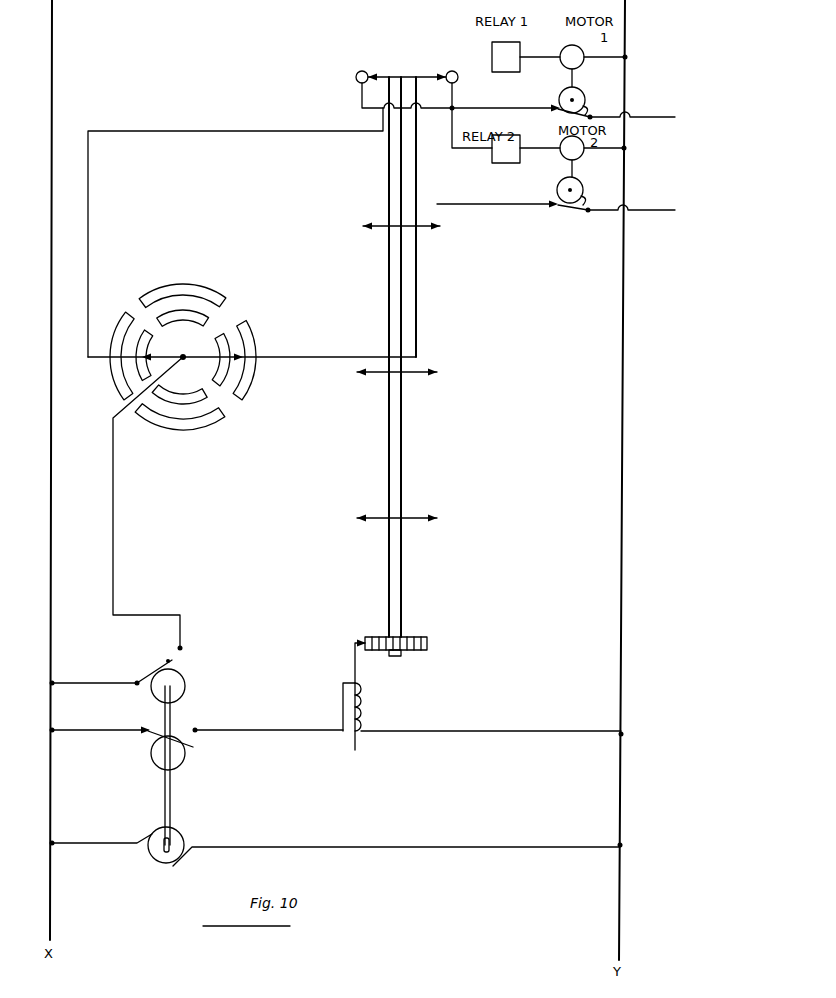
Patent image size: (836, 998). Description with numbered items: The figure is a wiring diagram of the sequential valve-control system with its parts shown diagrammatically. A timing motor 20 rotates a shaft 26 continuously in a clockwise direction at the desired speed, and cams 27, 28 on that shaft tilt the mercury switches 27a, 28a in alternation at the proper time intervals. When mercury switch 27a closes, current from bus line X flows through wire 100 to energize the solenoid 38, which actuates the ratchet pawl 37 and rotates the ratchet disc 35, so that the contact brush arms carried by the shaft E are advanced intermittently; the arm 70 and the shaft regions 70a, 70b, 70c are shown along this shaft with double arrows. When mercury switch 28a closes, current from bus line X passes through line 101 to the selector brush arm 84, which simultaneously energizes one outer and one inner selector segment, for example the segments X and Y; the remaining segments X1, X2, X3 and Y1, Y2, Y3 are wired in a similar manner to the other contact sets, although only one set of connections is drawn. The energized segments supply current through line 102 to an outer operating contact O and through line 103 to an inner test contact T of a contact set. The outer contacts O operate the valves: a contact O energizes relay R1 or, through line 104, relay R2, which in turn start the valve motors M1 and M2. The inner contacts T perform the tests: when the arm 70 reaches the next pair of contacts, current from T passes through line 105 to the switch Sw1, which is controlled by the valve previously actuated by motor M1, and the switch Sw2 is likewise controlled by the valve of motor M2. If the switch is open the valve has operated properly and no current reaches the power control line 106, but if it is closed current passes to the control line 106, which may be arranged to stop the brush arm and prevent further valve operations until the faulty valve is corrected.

The arm 70 is at (407, 357).
The shaft section 70a is at (422, 229).
The shaft section 70b is at (417, 378).
The shaft section 70c is at (417, 524).
The selector brush arm 84 is at (205, 346).
The wire 100 is at (268, 739).
The line 101 is at (148, 504).
The line 102 is at (252, 366).
The line 103 is at (235, 232).
The line 104 is at (471, 125).
The line 105 is at (506, 100).
The power control line 106 is at (616, 113).
The ratchet disc 35 is at (421, 638).
The ratchet pawl 37 is at (354, 640).
The solenoid 38 is at (364, 710).
The cam 28 is at (189, 693).
The mercury switch 28a is at (180, 660).
The cam 27 is at (189, 754).
The mercury switch 27a is at (148, 728).
The shaft 26 is at (174, 812).
The motor 20 is at (160, 864).
The inner contact T is at (355, 71).
The outer contact O is at (453, 72).
The shaft E is at (399, 494).
The selector segment X is at (245, 330).
The contact segment X1 is at (195, 428).
The contact segment X2 is at (117, 367).
The contact segment X3 is at (165, 292).
The selector segment Y is at (152, 350).
The contact segment Y1 is at (184, 326).
The contact segment Y2 is at (218, 384).
The contact segment Y3 is at (185, 384).
The relay R1 is at (506, 57).
The relay R2 is at (506, 149).
The valve motor M1 is at (572, 57).
The valve motor M2 is at (572, 148).
The switch Sw1 is at (589, 101).
The switch Sw2 is at (587, 191).